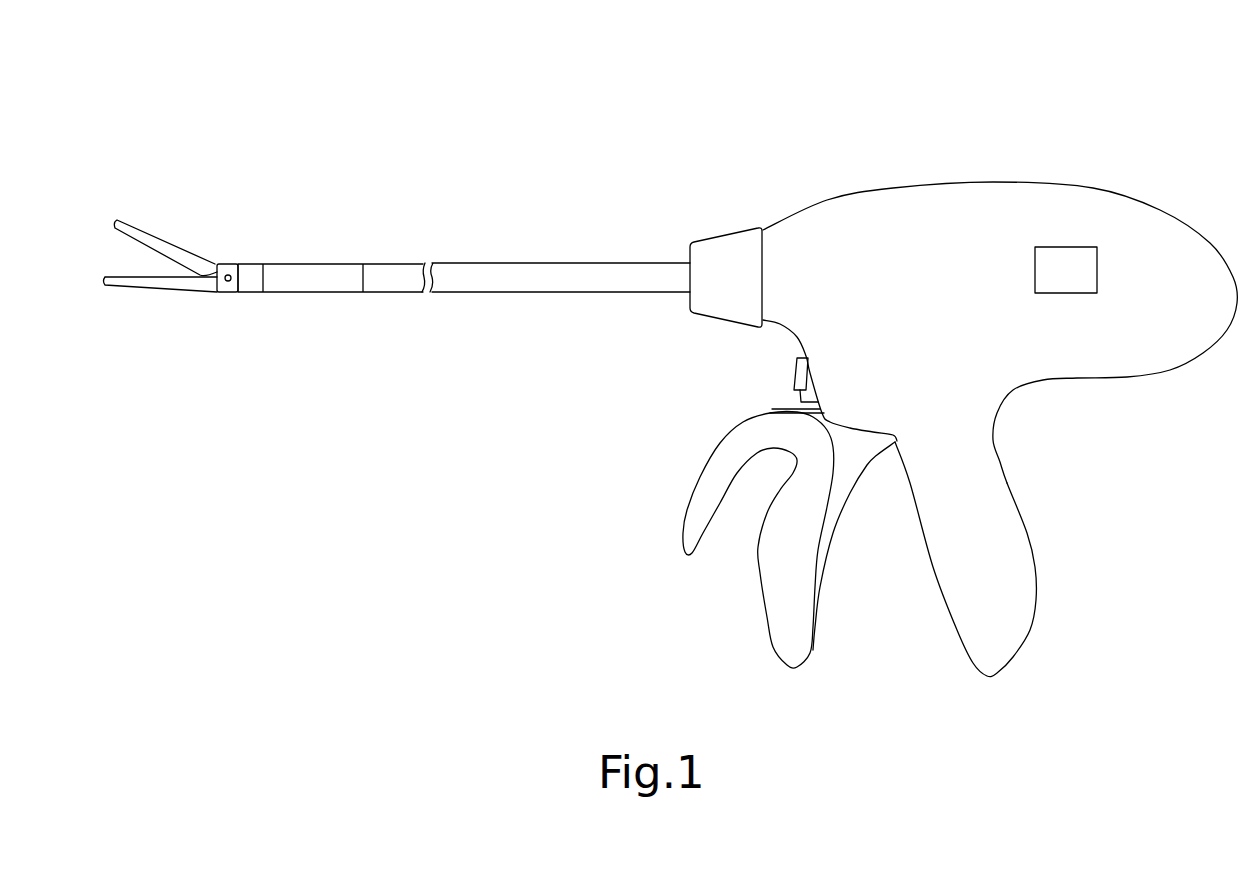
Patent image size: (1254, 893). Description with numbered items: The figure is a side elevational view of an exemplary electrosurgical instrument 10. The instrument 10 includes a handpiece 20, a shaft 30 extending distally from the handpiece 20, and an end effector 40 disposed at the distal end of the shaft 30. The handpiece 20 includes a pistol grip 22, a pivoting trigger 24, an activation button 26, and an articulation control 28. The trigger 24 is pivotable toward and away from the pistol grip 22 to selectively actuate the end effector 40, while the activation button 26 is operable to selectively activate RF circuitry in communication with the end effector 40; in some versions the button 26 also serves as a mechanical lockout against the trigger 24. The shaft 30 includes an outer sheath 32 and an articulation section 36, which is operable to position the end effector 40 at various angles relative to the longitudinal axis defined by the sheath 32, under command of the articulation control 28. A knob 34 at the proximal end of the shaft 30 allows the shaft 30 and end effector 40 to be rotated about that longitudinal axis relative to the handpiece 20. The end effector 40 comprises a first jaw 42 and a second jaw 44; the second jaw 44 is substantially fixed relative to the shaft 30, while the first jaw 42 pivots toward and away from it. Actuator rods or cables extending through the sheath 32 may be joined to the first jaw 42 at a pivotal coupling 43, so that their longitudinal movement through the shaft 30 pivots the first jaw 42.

The electrosurgical instrument 10 is at (1082, 86).
The handpiece 20 is at (1105, 178).
The pistol grip 22 is at (1033, 555).
The pivoting trigger 24 is at (758, 582).
The activation button 26 is at (795, 373).
The articulation control 28 is at (1088, 258).
The shaft 30 is at (573, 237).
The outer sheath 32 is at (458, 285).
The knob 34 is at (703, 303).
The articulation section 36 is at (320, 248).
The end effector 40 is at (188, 232).
The first jaw 42 is at (123, 290).
The pivotal coupling 43 is at (224, 305).
The second jaw 44 is at (138, 228).